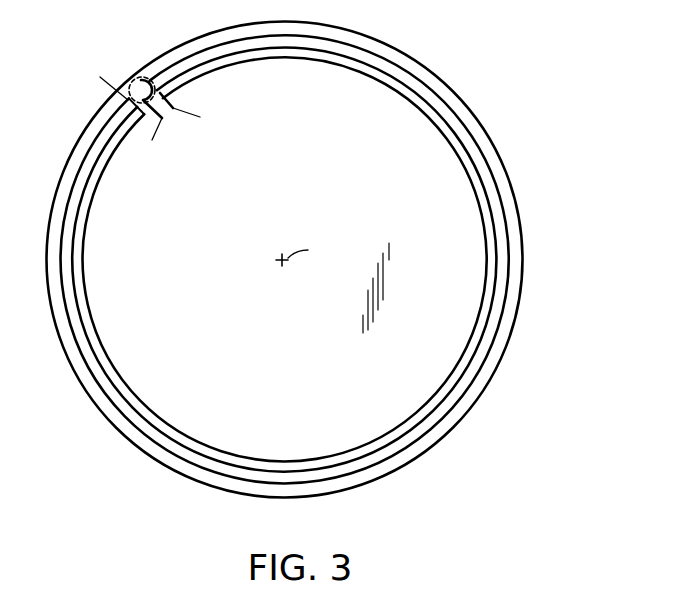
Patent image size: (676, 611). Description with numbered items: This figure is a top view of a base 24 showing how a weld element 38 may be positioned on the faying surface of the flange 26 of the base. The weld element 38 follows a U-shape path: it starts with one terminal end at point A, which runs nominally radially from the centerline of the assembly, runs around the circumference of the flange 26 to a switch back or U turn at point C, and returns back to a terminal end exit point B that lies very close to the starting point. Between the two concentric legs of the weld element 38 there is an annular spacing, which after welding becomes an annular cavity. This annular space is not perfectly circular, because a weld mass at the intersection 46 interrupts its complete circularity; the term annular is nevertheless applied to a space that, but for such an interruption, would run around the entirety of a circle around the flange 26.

The base 24 is at (326, 257).
The flange 26 is at (458, 96).
The weld element 38 is at (494, 220).
The intersection 46 is at (136, 78).